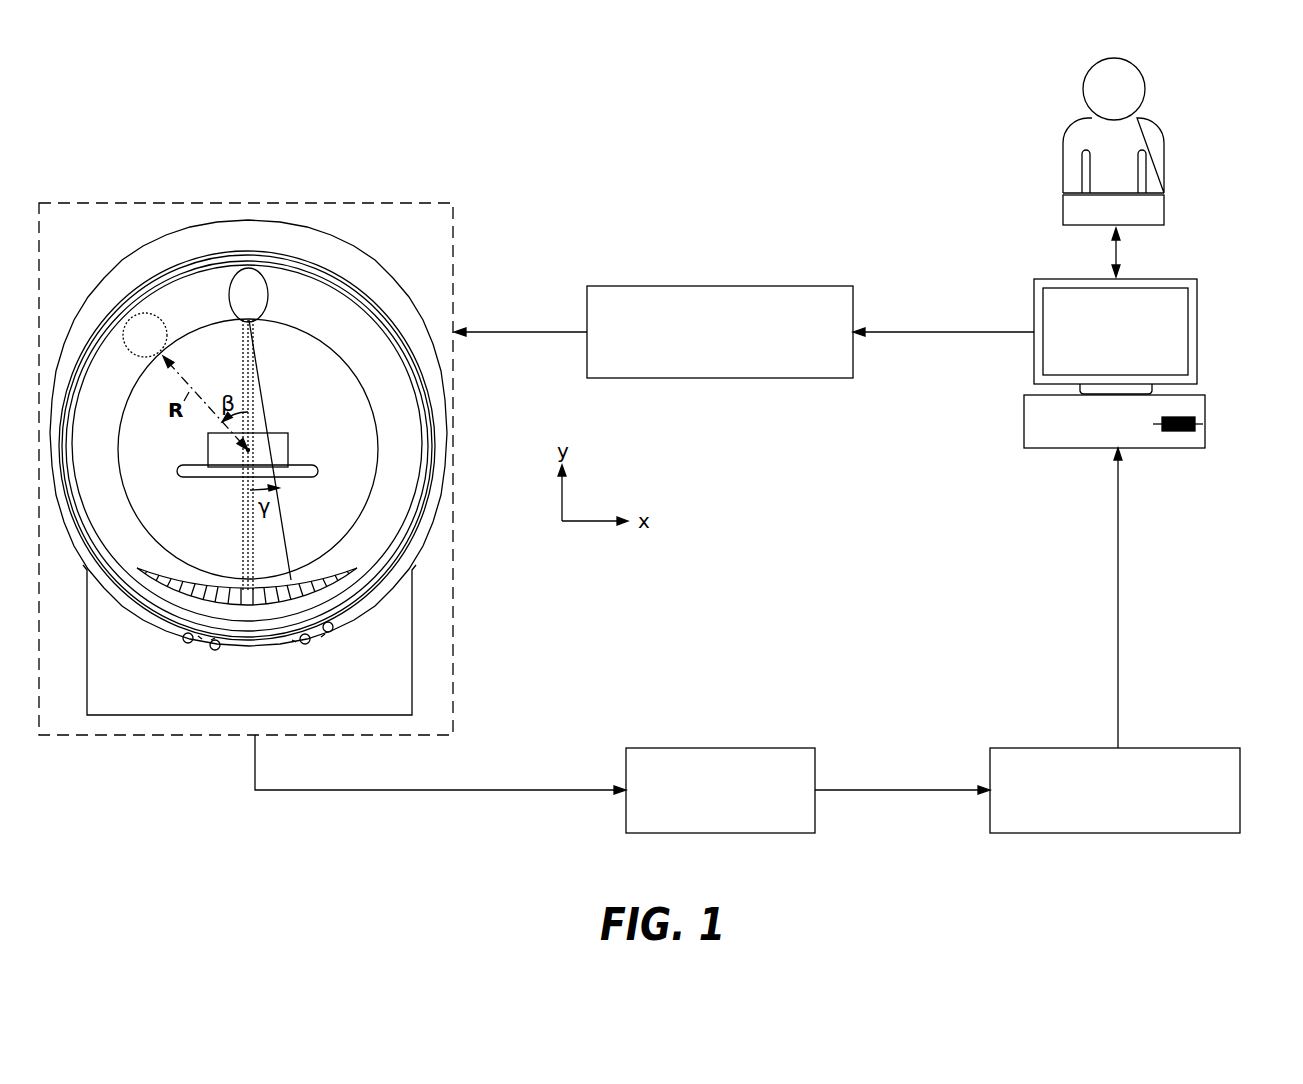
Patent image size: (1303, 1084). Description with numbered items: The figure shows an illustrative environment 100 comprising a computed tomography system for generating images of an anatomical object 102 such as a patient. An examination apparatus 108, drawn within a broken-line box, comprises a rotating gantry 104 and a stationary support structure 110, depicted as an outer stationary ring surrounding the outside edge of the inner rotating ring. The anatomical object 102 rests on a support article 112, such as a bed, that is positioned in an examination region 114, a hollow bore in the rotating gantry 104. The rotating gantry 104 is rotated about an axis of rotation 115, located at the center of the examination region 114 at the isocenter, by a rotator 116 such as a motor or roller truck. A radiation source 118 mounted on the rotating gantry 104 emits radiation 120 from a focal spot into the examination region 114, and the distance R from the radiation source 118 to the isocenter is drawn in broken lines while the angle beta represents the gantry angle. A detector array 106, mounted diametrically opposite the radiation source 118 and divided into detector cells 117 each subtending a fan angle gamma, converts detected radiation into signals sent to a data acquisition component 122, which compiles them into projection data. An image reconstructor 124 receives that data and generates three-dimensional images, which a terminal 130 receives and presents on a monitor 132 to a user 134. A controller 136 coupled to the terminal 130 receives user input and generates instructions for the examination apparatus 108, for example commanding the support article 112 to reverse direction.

The environment 100 is at (127, 118).
The anatomical object 102 is at (255, 445).
The rotating gantry 104 is at (160, 267).
The detector array 106 is at (173, 596).
The examination apparatus 108 is at (453, 203).
The support structure 110 is at (357, 263).
The support article 112 is at (194, 465).
The examination region 114 is at (340, 515).
The axis of rotation 115 is at (255, 452).
The rotator 116 is at (335, 627).
The detector cells 117 is at (348, 568).
The radiation source 118 is at (266, 292).
The radiation 120 is at (242, 555).
The data acquisition component 122 is at (718, 833).
The image reconstructor 124 is at (1240, 748).
The terminal 130 is at (1205, 396).
The monitor 132 is at (1197, 280).
The user 134 is at (1165, 133).
The controller 136 is at (720, 286).